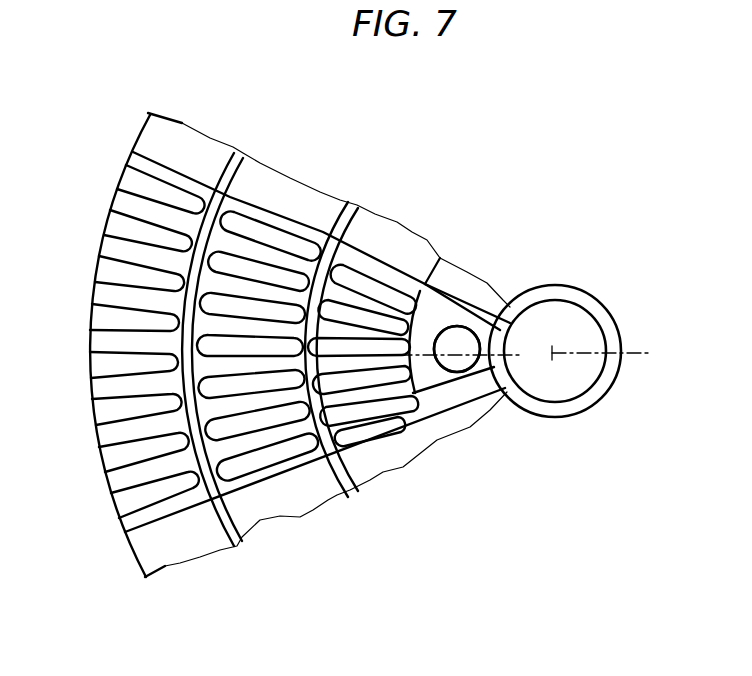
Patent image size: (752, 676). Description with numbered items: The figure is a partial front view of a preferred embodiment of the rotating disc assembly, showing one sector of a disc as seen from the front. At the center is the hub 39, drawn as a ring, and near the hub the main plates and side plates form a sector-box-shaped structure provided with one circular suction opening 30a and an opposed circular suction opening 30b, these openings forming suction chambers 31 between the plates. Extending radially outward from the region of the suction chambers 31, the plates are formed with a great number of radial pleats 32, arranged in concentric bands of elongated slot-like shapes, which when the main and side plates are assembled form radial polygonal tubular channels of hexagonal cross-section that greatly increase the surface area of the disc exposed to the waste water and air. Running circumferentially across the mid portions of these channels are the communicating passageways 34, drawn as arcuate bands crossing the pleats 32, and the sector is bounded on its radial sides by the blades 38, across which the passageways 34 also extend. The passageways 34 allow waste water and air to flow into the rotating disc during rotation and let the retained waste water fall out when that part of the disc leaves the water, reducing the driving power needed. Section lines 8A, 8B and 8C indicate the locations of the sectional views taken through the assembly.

The circular suction opening 30a is at (453, 338).
The circular suction opening 30b is at (453, 338).
The suction chamber 31 is at (437, 382).
The radial pleat 32 is at (332, 270).
The communicating passageway 34 is at (328, 465).
The blade 38 is at (363, 259).
The hub 39 is at (572, 298).
The section line 8A is at (137, 342).
The section line 8B is at (180, 367).
The section line 8C is at (79, 567).